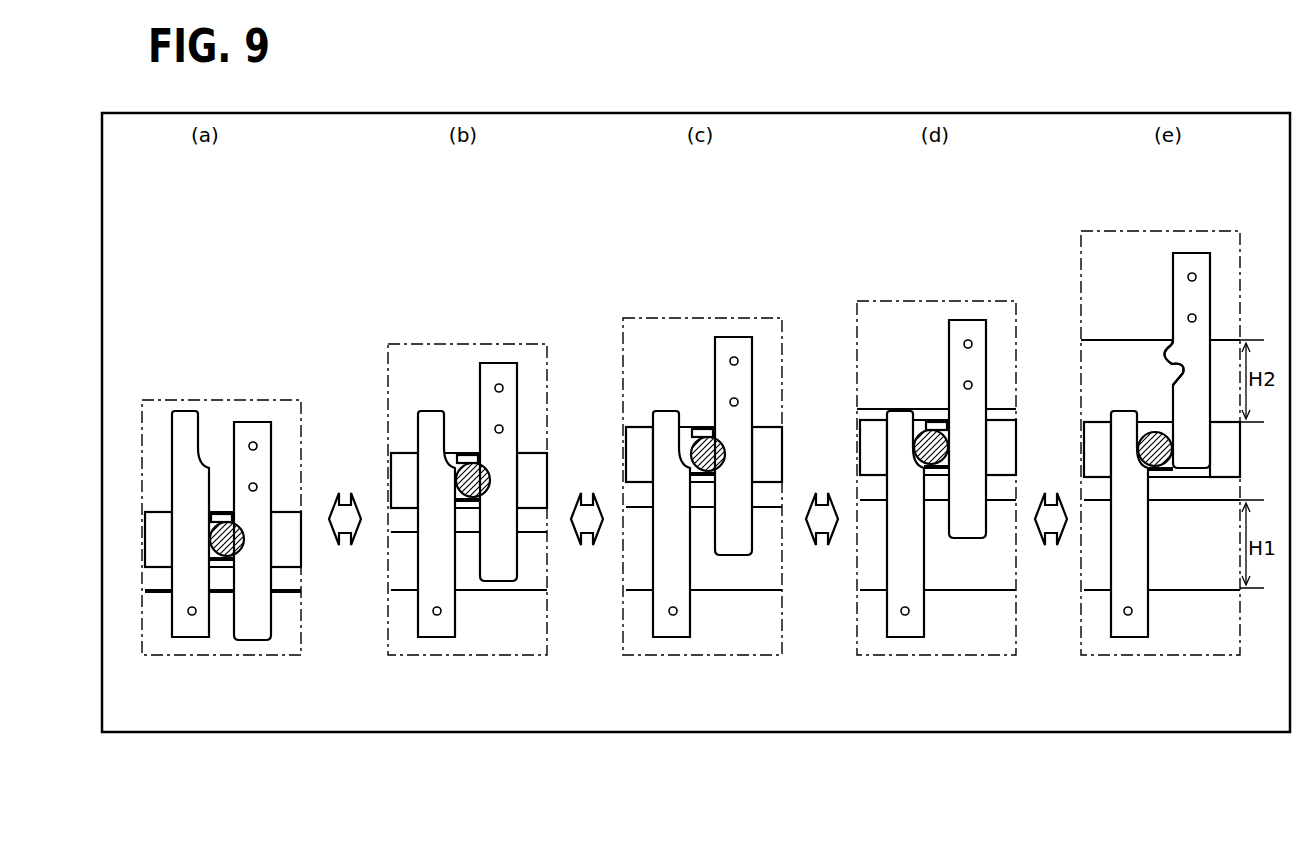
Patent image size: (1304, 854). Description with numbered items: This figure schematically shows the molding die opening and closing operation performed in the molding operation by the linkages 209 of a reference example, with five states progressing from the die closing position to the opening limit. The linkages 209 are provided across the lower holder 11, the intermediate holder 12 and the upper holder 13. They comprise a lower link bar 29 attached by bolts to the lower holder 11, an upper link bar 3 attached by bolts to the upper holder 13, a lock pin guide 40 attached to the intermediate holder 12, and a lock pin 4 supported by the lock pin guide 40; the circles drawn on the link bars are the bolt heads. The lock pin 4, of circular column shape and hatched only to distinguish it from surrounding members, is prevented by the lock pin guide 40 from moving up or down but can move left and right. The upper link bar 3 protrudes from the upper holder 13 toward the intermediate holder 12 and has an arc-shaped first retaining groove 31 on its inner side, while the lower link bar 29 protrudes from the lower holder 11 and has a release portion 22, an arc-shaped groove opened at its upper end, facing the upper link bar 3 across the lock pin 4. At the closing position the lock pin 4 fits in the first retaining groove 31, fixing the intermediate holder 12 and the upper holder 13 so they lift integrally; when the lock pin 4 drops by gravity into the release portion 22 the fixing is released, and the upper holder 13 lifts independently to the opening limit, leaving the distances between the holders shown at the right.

The linkages 209 is at (243, 343).
The upper holder 13 is at (160, 432).
The lower holder 11 is at (160, 645).
The intermediate holder 12 is at (152, 577).
The lock pin guide 40 is at (290, 520).
The release portion 22 is at (212, 458).
The upper link bar 3 is at (253, 433).
The first retaining groove 31 is at (240, 560).
The lock pin 4 is at (215, 560).
The lower link bar 29 is at (192, 625).